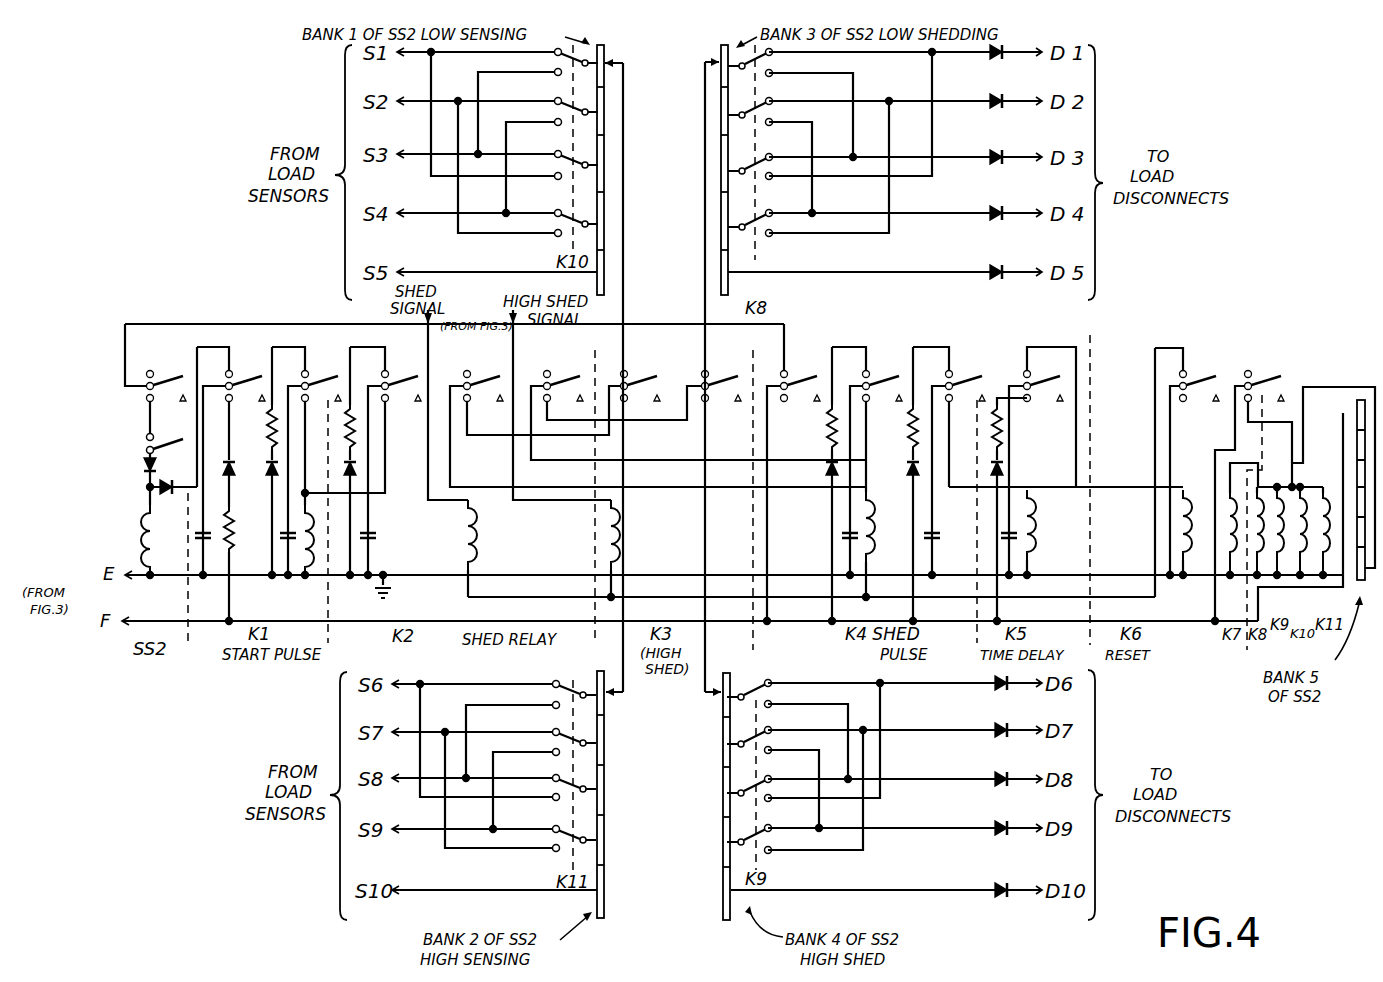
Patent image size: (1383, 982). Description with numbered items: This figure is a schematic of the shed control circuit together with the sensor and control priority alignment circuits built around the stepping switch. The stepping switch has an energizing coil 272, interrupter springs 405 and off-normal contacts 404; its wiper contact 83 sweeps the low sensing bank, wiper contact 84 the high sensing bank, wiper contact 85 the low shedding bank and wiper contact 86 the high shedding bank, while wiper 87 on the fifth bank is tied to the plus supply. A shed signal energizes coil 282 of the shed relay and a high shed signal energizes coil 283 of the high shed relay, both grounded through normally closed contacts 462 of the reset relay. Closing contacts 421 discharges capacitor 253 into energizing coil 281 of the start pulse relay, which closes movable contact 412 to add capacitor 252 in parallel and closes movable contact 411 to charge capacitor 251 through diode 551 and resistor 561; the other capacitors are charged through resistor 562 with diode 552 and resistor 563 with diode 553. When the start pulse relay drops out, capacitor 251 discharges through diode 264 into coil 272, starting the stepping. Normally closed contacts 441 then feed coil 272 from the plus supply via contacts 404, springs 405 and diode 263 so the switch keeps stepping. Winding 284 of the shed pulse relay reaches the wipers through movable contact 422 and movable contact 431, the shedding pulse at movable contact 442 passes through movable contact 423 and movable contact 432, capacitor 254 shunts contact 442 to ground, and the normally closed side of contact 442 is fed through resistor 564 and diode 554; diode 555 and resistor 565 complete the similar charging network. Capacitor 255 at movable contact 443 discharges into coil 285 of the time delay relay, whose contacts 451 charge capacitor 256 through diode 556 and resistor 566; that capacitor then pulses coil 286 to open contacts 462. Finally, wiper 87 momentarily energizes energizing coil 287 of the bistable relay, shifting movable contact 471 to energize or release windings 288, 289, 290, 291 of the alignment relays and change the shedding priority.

The wiper contact 83 is at (619, 64).
The wiper contact 84 is at (615, 697).
The wiper contact 85 is at (713, 62).
The wiper contact 86 is at (716, 698).
The wiper 87 is at (1352, 412).
The off-normal contacts 404 is at (184, 372).
The interrupter springs 405 is at (185, 436).
The movable contact 411 is at (263, 372).
The movable contact 412 is at (339, 372).
The contacts 421 is at (419, 372).
The movable contact 422 is at (500, 372).
The movable contact 423 is at (580, 372).
The movable contact 431 is at (668, 364).
The movable contact 432 is at (748, 364).
The normally closed contacts 441 is at (826, 364).
The movable contact 442 is at (908, 364).
The movable contact 443 is at (988, 364).
The contacts 451 is at (1070, 366).
The normally closed contacts 462 is at (1224, 364).
The movable contact 471 is at (1288, 364).
The capacitor 251 is at (196, 545).
The capacitor 252 is at (284, 540).
The capacitor 253 is at (380, 538).
The capacitor 254 is at (840, 538).
The capacitor 255 is at (936, 530).
The capacitor 256 is at (1000, 540).
The diode 263 is at (145, 468).
The diode 264 is at (157, 492).
The energizing coil 272 is at (142, 540).
The energizing coil 281 is at (316, 565).
The energizing coil 282 is at (478, 530).
The energizing coil 283 is at (601, 545).
The winding 284 is at (878, 546).
The coil 285 is at (1036, 540).
The coil 286 is at (1195, 515).
The energizing coil 287 is at (1225, 545).
The winding 288 is at (1252, 512).
The winding 289 is at (1273, 510).
The winding 290 is at (1302, 500).
The winding 291 is at (1322, 495).
The diode 551 is at (268, 462).
The diode 552 is at (232, 477).
The diode 553 is at (358, 468).
The diode 554 is at (826, 470).
The diode 555 is at (907, 470).
The diode 556 is at (1004, 470).
The resistor 561 is at (233, 520).
The resistor 562 is at (268, 427).
The resistor 563 is at (358, 428).
The resistor 564 is at (826, 428).
The resistor 565 is at (910, 440).
The resistor 566 is at (1002, 428).